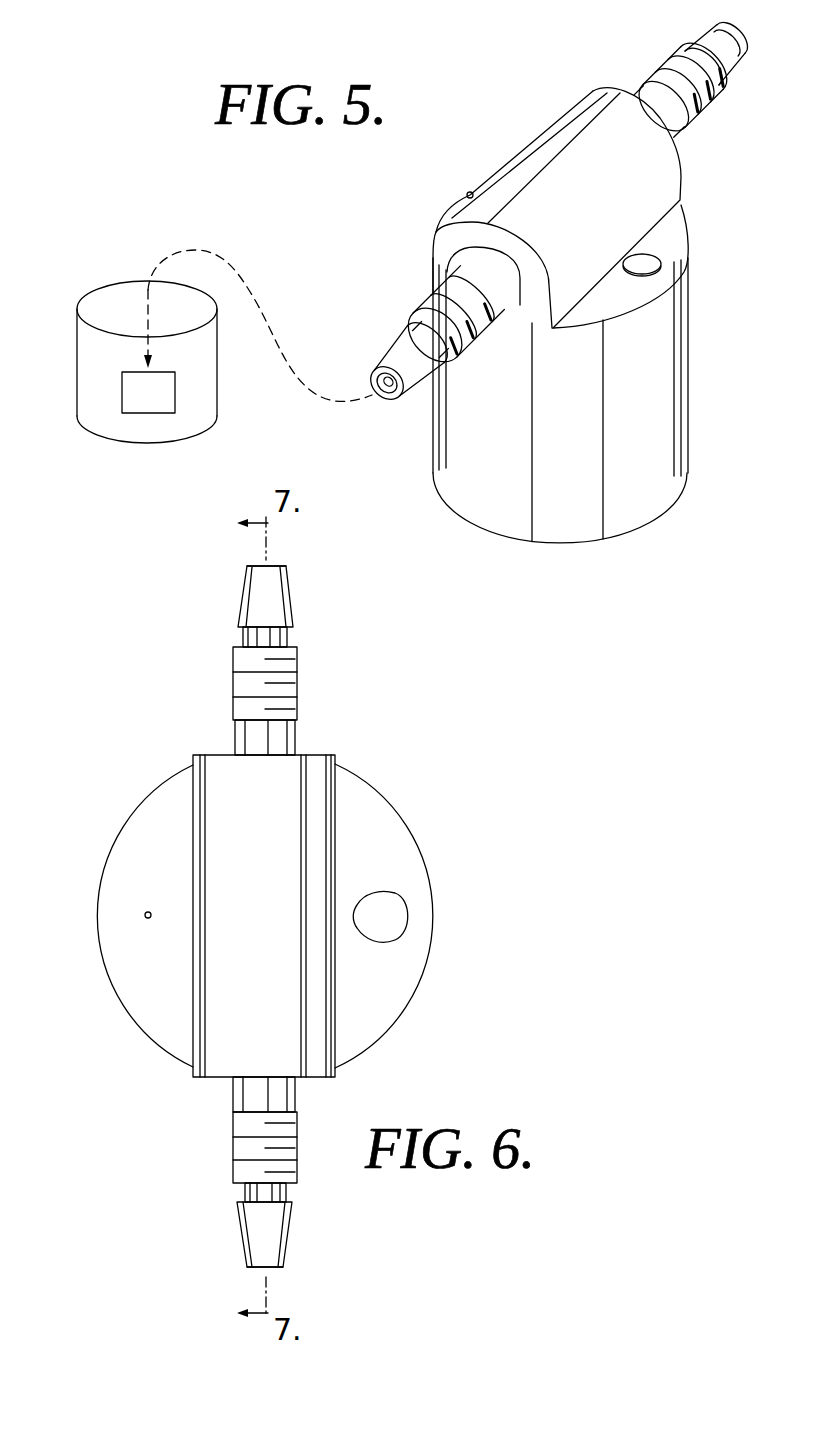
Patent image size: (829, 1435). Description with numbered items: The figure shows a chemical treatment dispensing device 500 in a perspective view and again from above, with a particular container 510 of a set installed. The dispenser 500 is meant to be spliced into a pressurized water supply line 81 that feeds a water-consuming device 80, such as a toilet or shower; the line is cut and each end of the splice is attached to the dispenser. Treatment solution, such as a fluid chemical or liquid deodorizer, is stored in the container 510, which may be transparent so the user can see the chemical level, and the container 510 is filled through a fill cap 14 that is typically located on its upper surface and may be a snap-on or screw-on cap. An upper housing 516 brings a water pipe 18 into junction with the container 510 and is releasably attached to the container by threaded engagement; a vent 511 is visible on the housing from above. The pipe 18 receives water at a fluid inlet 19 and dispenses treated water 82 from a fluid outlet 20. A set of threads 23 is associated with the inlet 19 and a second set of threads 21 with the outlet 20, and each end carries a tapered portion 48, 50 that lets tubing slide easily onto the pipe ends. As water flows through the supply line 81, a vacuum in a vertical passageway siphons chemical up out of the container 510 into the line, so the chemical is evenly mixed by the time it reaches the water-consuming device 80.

In FIG. 5, the chemical treatment dispensing device 500 is at (543, 278).
In FIG. 5, the container 510 is at (511, 475).
In FIG. 5, the upper housing 516 is at (553, 128).
In FIG. 6, the upper housing 516 is at (286, 942).
In FIG. 5, the vent 511 is at (467, 195).
In FIG. 6, the vent 511 is at (145, 916).
In FIG. 5, the fill cap 14 is at (652, 254).
In FIG. 6, the fill cap 14 is at (395, 915).
In FIG. 5, the water pipe 18 is at (680, 130).
In FIG. 6, the water pipe 18 is at (293, 733).
In FIG. 5, the set of threads 23 is at (655, 68).
In FIG. 6, the set of threads 23 is at (297, 681).
In FIG. 5, the tapered portion 48 is at (700, 44).
In FIG. 6, the tapered portion 48 is at (243, 592).
In FIG. 5, the fluid inlet 19 is at (740, 33).
In FIG. 6, the fluid inlet 19 is at (280, 565).
In FIG. 5, the second set of threads 21 is at (487, 334).
In FIG. 6, the second set of threads 21 is at (298, 1138).
In FIG. 5, the tapered portion 50 is at (388, 348).
In FIG. 6, the tapered portion 50 is at (243, 1236).
In FIG. 5, the fluid outlet 20 is at (372, 390).
In FIG. 6, the fluid outlet 20 is at (285, 1268).
In FIG. 5, the water-consuming device 80 is at (147, 362).
In FIG. 5, the pressurized water supply line 81 is at (207, 255).
In FIG. 5, the treated water 82 is at (148, 392).